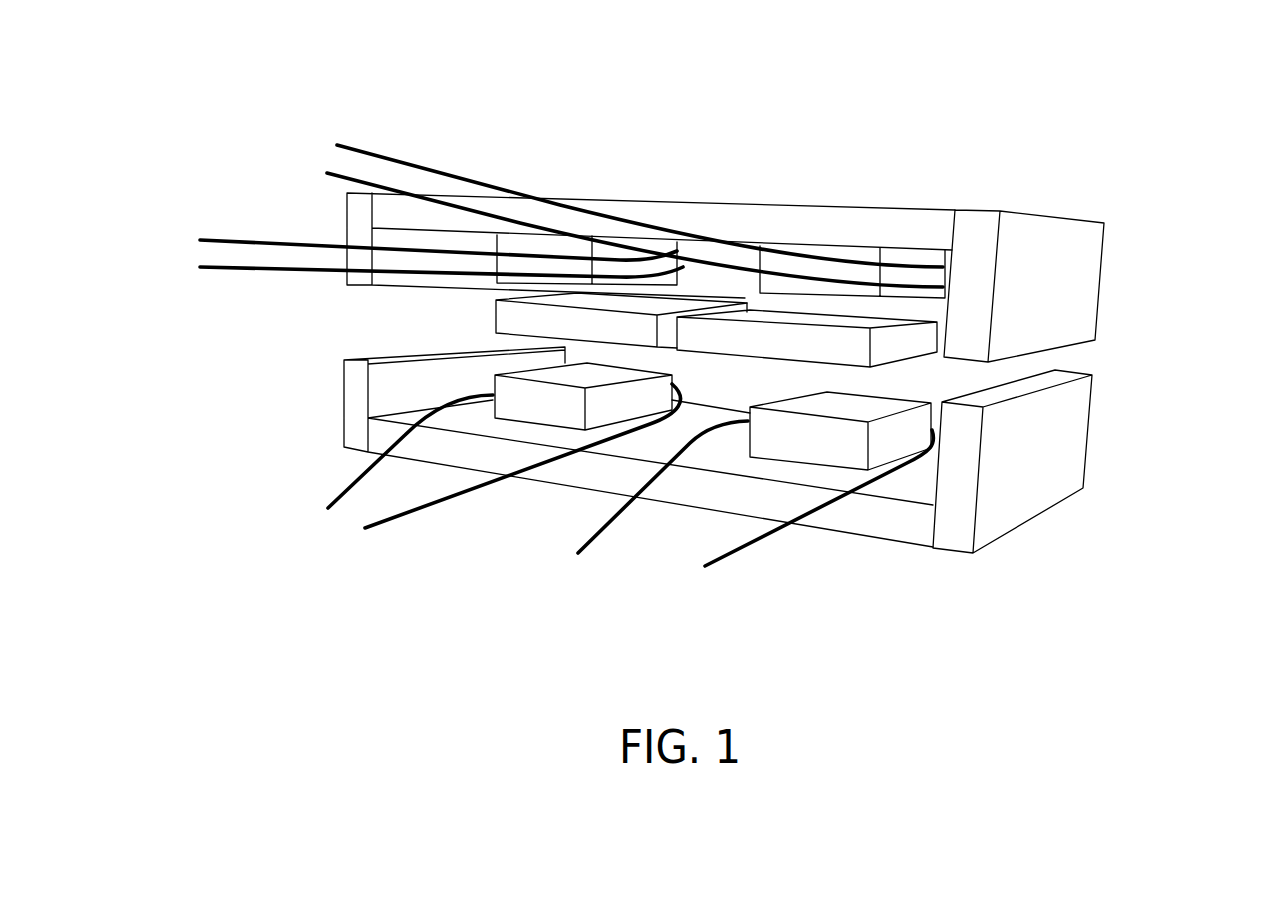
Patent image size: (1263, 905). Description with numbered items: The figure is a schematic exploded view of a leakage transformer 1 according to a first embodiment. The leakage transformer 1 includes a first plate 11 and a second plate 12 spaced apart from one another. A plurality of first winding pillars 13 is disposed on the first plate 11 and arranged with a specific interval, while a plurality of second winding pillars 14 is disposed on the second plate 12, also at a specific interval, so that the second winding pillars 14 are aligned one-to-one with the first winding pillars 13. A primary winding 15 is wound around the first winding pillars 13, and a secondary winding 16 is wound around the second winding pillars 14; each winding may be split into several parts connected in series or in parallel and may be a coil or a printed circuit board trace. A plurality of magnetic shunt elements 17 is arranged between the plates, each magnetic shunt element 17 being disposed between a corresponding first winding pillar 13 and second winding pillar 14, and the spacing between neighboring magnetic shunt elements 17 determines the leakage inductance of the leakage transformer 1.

The leakage transformer 1 is at (1238, 103).
The first plate 11 is at (737, 217).
The second plate 12 is at (895, 518).
The first winding pillars 13 is at (563, 250).
The second winding pillars 14 is at (527, 398).
The primary winding 15 is at (338, 167).
The secondary winding 16 is at (436, 503).
The magnetic shunt elements 17 is at (515, 312).